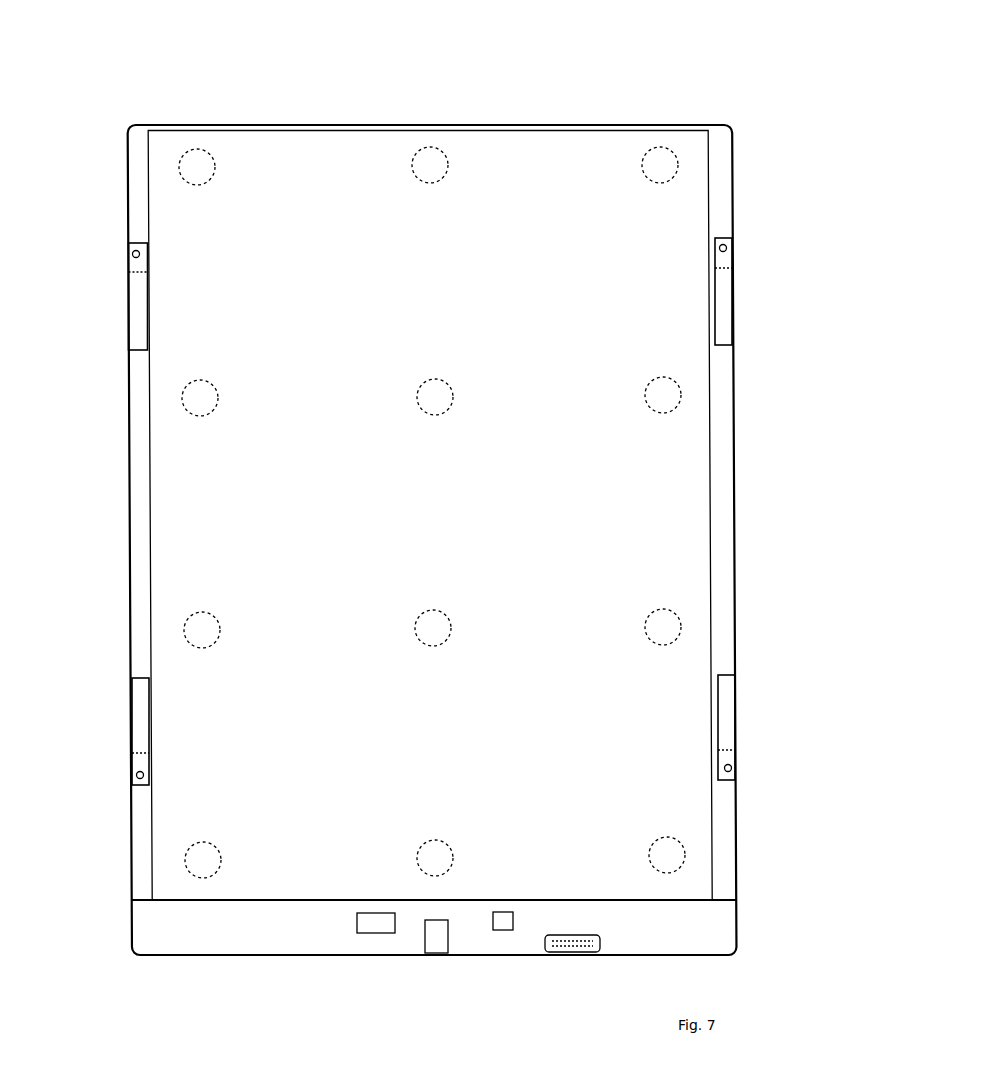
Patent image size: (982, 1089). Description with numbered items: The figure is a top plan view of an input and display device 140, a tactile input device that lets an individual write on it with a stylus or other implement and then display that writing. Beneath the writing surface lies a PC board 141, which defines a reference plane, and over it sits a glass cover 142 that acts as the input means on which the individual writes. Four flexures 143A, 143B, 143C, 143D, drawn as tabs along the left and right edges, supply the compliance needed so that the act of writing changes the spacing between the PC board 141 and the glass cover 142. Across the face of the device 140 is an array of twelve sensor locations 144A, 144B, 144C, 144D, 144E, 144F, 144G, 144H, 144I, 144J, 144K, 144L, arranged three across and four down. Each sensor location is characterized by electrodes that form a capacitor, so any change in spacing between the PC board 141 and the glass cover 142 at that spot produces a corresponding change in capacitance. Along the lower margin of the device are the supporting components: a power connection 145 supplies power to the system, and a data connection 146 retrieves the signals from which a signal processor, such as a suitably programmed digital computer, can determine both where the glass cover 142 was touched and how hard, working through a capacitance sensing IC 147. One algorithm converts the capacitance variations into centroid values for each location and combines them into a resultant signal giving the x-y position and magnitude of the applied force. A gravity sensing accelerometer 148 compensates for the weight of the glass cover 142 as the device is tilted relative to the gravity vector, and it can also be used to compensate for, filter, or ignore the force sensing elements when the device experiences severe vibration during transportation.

The input and display device 140 is at (282, 97).
The PC board 141 is at (727, 475).
The glass cover 142 is at (688, 227).
The flexure 143A is at (128, 296).
The flexure 143B is at (723, 285).
The flexure 143C is at (138, 733).
The flexure 143D is at (728, 707).
The sensor location 144A is at (188, 178).
The sensor location 144B is at (422, 176).
The sensor location 144C is at (650, 178).
The sensor location 144D is at (190, 410).
The sensor location 144E is at (422, 408).
The sensor location 144F is at (650, 405).
The sensor location 144G is at (190, 642).
The sensor location 144H is at (422, 640).
The sensor location 144I is at (650, 637).
The sensor location 144J is at (212, 872).
The sensor location 144K is at (440, 872).
The sensor location 144L is at (655, 866).
The power connection 145 is at (427, 953).
The data connection 146 is at (548, 950).
The capacitance sensing IC 147 is at (503, 930).
The gravity sensing accelerometer 148 is at (378, 933).